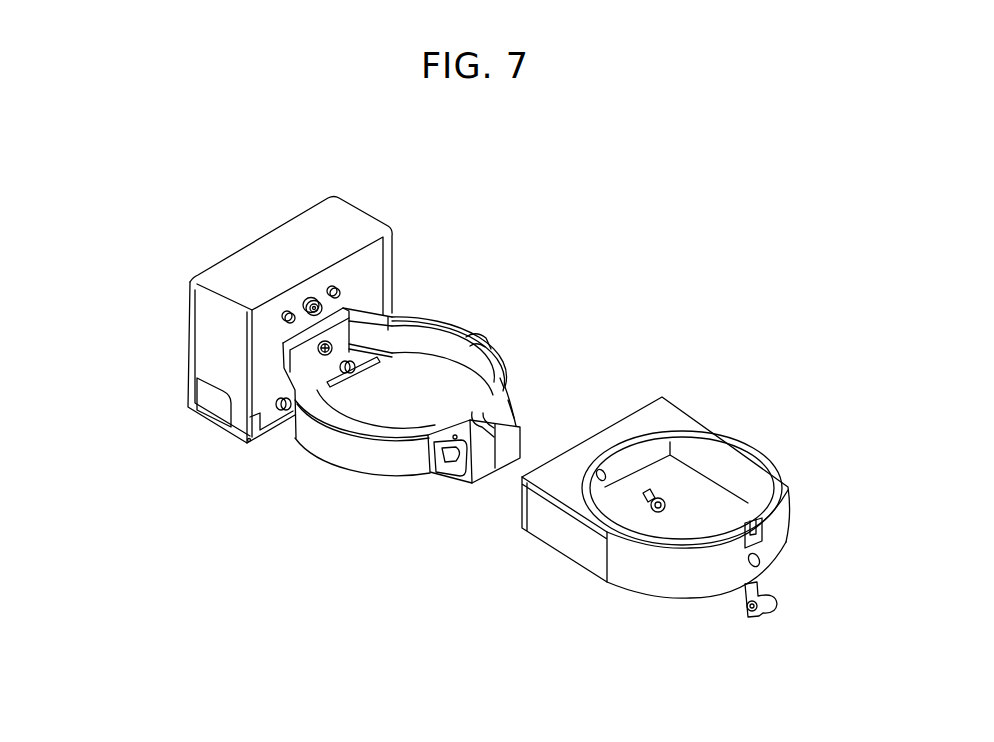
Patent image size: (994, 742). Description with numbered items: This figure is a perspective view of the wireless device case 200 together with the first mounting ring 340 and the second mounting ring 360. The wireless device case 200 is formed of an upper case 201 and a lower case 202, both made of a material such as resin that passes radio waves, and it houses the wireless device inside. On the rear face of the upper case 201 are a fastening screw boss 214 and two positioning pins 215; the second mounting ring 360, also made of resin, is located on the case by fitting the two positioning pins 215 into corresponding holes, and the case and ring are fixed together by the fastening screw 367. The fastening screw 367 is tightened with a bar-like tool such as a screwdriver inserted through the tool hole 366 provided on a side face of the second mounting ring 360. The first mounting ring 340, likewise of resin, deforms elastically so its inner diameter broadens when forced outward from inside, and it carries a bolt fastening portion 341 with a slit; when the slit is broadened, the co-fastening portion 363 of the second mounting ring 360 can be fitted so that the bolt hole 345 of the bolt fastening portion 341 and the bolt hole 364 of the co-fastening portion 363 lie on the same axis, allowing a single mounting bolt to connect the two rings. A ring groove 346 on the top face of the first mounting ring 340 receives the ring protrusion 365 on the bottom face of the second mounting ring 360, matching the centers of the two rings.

The wireless device case 200 is at (180, 268).
The upper case 201 is at (340, 213).
The lower case 202 is at (200, 407).
The fastening screw boss 214 is at (306, 300).
The positioning pins 215 is at (331, 289).
The first mounting ring 340 is at (422, 333).
The bolt fastening portion 341 is at (520, 418).
The bolt hole 345 is at (455, 458).
The ring groove 346 is at (498, 368).
The second mounting ring 360 is at (665, 417).
The co-fastening portion 363 is at (765, 607).
The bolt hole 364 is at (750, 610).
The ring protrusion 365 is at (752, 502).
The tool hole 366 is at (760, 557).
The fastening screw 367 is at (663, 499).